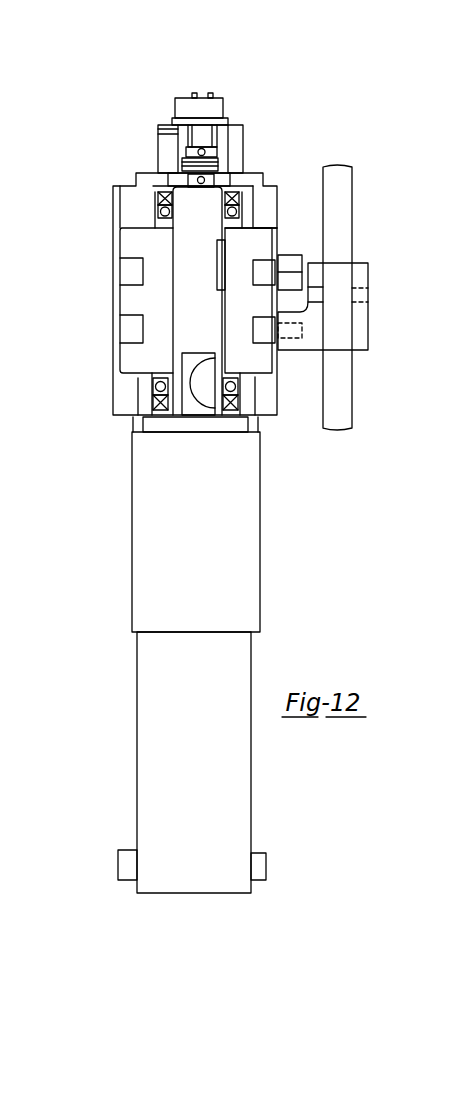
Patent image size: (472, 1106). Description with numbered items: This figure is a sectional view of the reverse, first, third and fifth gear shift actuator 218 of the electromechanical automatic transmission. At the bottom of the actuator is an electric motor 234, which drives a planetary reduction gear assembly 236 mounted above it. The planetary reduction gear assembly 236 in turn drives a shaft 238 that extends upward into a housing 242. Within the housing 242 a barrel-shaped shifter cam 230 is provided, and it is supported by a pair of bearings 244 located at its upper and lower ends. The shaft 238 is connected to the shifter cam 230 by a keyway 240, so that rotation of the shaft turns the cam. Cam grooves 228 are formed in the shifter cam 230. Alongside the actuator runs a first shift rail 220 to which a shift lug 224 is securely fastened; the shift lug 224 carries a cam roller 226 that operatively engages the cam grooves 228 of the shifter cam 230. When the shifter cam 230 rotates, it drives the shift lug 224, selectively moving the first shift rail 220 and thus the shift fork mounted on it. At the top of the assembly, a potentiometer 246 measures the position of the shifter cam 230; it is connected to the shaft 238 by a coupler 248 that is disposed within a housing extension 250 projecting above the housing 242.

The R-1-3-5 shift actuator 218 is at (262, 153).
The first shift rail 220 is at (337, 240).
The shift lug 224 is at (358, 333).
The cam roller 226 is at (265, 270).
The cam grooves 228 is at (132, 260).
The shifter cam 230 is at (243, 243).
The electric motor 234 is at (193, 798).
The planetary reduction gear assembly 236 is at (203, 547).
The shaft 238 is at (182, 337).
The keyway 240 is at (213, 270).
The housing 242 is at (127, 210).
The bearings 244 is at (157, 205).
The potentiometer 246 is at (198, 110).
The coupler 248 is at (207, 138).
The housing extension 250 is at (168, 148).